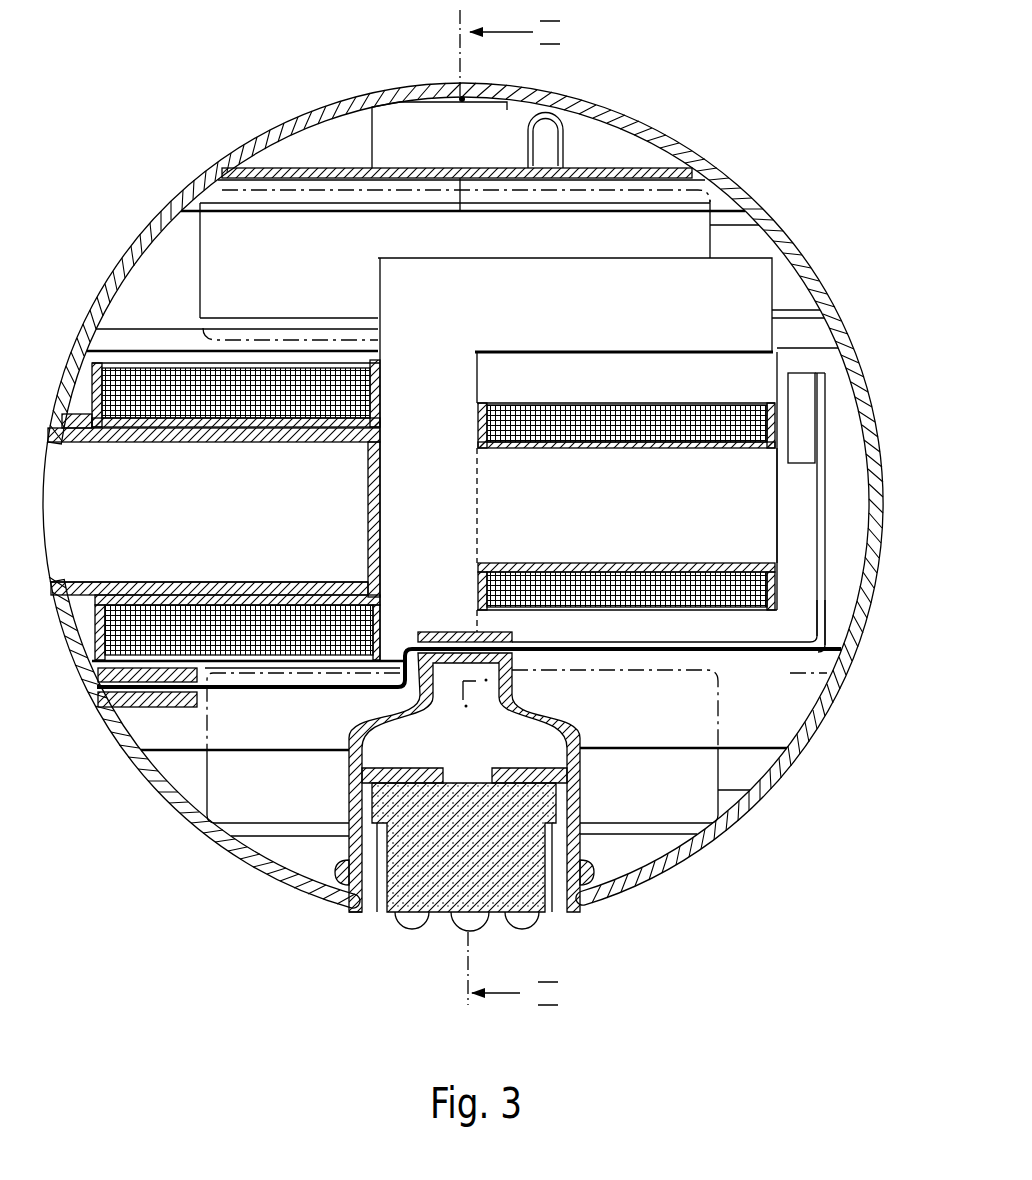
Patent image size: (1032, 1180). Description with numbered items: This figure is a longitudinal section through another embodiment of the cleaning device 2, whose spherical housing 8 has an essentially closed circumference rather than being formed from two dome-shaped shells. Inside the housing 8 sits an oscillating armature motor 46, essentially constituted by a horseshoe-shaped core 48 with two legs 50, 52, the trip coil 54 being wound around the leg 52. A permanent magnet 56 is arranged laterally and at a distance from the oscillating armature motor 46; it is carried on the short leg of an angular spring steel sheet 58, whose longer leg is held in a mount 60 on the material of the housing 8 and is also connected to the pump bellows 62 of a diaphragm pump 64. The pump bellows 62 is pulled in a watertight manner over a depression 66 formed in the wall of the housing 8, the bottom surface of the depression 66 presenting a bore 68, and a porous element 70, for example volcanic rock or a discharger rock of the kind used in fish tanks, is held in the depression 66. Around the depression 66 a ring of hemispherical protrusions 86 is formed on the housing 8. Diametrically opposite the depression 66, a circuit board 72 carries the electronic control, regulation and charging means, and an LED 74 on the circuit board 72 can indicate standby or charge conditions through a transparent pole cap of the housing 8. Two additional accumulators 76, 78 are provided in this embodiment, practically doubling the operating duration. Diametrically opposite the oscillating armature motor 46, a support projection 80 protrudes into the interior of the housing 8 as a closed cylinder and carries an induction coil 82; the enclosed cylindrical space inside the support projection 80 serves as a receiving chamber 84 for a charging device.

The device 2 is at (740, 134).
The housing 8 is at (786, 228).
The oscillating armature motor 46 is at (778, 358).
The core 48 is at (486, 383).
The leg 50 is at (757, 290).
The leg 52 is at (770, 490).
The trip coil 54 is at (747, 607).
The permanent magnet 56 is at (805, 408).
The spring steel sheet 58 is at (827, 605).
The mount 60 is at (141, 704).
The pump bellows 62 is at (568, 732).
The diaphragm pump 64 is at (603, 800).
The depression 66 is at (377, 934).
The bore 68 is at (457, 773).
The porous element 70 is at (545, 924).
The circuit board 72 is at (637, 165).
The LED 74 is at (553, 113).
The accumulator 76 is at (210, 248).
The accumulator 78 is at (223, 802).
The support projection 80 is at (140, 442).
The induction coil 82 is at (147, 363).
The receiving chamber 84 is at (272, 507).
The hemispherical protrusions 86 is at (343, 925).